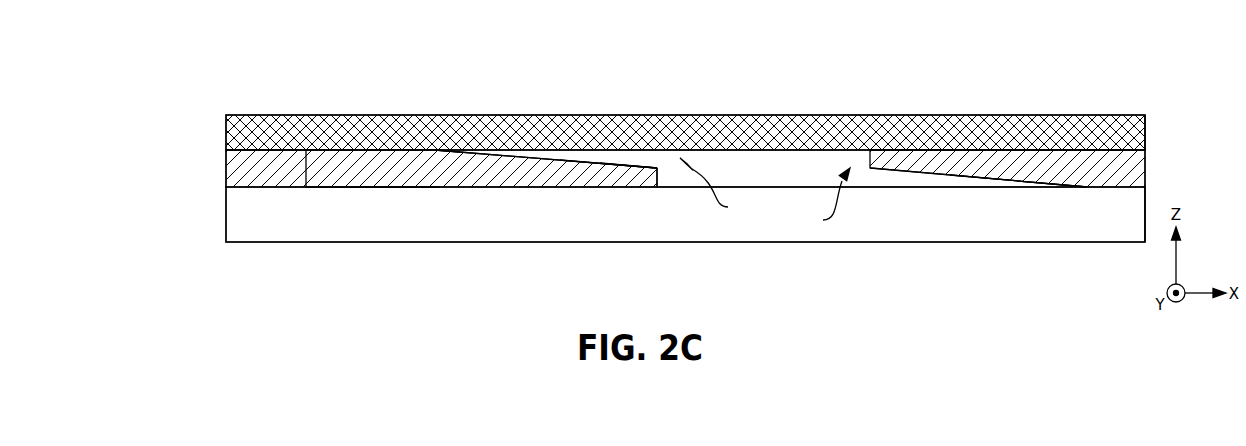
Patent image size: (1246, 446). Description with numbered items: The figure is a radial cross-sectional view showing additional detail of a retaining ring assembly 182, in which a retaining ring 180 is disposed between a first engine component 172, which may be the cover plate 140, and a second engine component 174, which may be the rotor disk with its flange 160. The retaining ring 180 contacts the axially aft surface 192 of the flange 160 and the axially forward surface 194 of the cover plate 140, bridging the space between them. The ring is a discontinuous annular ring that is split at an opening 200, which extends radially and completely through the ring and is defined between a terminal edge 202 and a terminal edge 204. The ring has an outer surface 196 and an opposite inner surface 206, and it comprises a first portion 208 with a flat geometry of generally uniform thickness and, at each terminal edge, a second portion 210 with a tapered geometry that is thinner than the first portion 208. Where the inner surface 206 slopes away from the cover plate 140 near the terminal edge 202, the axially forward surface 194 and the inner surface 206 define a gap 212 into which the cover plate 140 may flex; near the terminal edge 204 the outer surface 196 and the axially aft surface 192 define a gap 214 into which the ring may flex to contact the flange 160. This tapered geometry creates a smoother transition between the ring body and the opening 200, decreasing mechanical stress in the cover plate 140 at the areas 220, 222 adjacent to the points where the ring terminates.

The cover plate 140 is at (240, 130).
The flange 160 is at (243, 217).
The first engine component 172 is at (1142, 133).
The second engine component 174 is at (1133, 197).
The retaining ring 180 is at (242, 172).
The retaining ring assembly 182 is at (134, 93).
The axially aft surface 192 is at (306, 150).
The axially forward surface 194 is at (345, 151).
The outer surface 196 is at (397, 188).
The opening 200 is at (752, 165).
The terminal edge 202 is at (657, 177).
The terminal edge 204 is at (870, 158).
The inner surface 206 is at (513, 155).
The first portion 208 is at (448, 158).
The second portion 210 is at (607, 173).
The gap 212 is at (643, 158).
The gap 214 is at (890, 180).
The area 220 is at (721, 187).
The area 222 is at (819, 200).